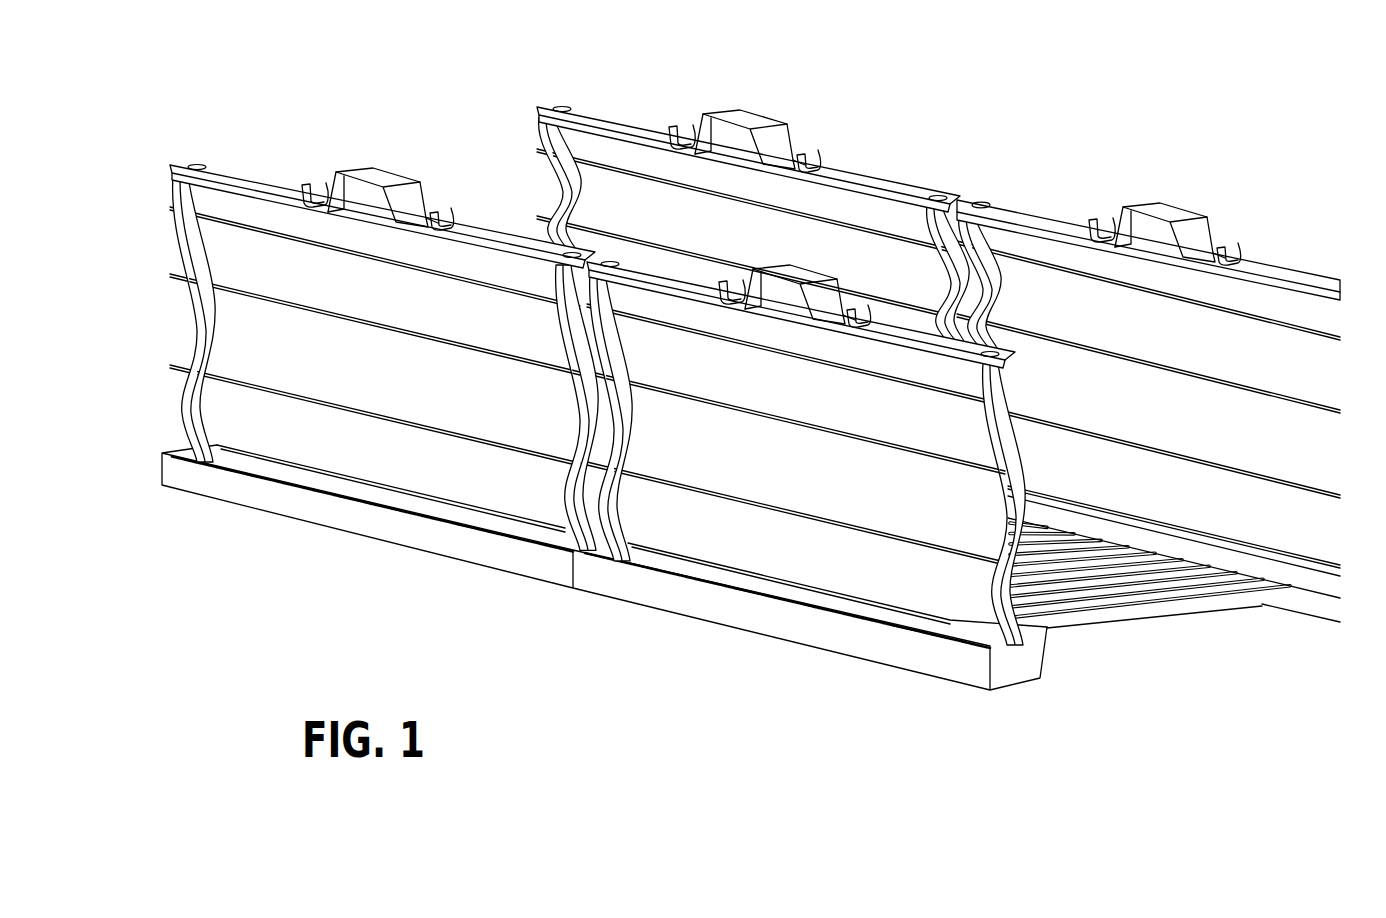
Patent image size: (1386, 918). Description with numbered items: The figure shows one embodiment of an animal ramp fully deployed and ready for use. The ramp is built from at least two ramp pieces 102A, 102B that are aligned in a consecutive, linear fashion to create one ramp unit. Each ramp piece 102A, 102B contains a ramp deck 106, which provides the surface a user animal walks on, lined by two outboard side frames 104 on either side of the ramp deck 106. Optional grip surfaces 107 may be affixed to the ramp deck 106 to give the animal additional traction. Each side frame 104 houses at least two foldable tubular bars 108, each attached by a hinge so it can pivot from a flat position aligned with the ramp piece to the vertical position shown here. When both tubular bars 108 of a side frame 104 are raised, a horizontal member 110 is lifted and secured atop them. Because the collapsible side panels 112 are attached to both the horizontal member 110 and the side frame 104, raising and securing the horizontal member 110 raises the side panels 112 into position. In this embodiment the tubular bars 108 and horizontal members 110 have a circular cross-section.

The ramp piece 102A is at (163, 510).
The ramp piece 102B is at (571, 618).
The side frame 104 is at (1312, 605).
The ramp deck 106 is at (1073, 627).
The grip surfaces 107 is at (1160, 599).
The tubular bar 108 is at (623, 524).
The horizontal member 110 is at (906, 342).
The side panels 112 is at (917, 577).